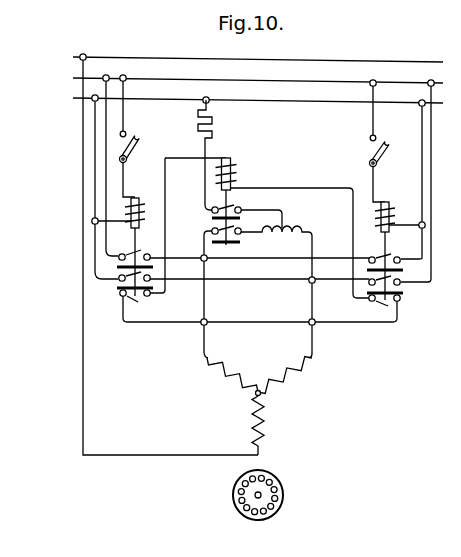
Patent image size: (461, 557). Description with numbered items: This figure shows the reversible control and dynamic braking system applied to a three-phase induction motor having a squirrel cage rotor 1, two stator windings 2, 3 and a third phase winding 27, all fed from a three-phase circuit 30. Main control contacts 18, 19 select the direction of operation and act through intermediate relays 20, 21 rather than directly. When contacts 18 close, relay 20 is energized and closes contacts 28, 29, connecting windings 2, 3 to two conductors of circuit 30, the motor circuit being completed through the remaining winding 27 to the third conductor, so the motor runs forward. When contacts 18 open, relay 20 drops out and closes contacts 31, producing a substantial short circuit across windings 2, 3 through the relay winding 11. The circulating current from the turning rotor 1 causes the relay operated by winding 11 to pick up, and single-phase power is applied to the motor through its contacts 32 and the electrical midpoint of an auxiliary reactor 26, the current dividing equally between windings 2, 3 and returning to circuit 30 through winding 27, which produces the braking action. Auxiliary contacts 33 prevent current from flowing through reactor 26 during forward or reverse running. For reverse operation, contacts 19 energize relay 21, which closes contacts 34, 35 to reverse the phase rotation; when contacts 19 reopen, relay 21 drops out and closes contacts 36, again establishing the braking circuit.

The rotor 1 is at (283, 492).
The stator winding 2 is at (232, 368).
The stator winding 3 is at (285, 369).
The relay winding 11 is at (236, 174).
The main control contacts 18 is at (137, 147).
The main control contacts 19 is at (378, 149).
The intermediate relay 20 is at (137, 197).
The intermediate relay 21 is at (386, 201).
The auxiliary reactor 26 is at (290, 228).
The third phase winding 27 is at (266, 421).
The contacts 28 is at (139, 249).
The contacts 29 is at (136, 275).
The three-phase circuit 30 is at (318, 101).
The contacts 31 is at (136, 303).
The contacts 32 is at (236, 208).
The auxiliary contacts 33 is at (242, 229).
The contacts 34 is at (392, 256).
The contacts 35 is at (401, 279).
The contacts 36 is at (384, 307).